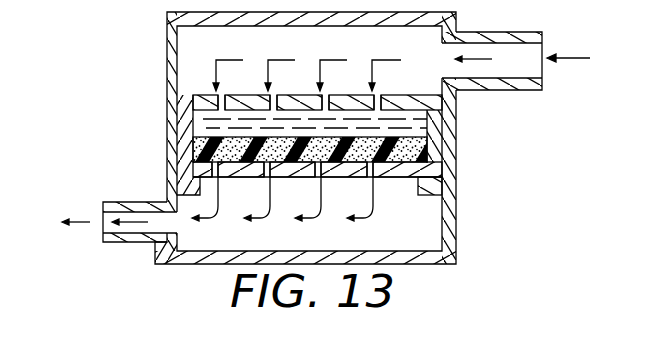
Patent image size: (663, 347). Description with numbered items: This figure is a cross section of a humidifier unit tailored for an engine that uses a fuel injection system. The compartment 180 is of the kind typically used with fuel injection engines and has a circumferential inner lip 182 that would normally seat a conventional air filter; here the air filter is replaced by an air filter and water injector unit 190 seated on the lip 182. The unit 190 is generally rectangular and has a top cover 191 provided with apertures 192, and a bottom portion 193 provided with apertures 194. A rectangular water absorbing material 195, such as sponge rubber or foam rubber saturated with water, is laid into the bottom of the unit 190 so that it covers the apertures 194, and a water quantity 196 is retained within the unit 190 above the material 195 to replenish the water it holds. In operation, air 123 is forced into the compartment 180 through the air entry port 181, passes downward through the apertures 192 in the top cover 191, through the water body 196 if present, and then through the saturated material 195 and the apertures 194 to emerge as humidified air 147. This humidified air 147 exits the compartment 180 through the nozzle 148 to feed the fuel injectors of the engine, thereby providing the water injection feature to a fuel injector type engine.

The air 123 is at (343, 60).
The humidified air 147 is at (304, 225).
The nozzle 148 is at (140, 240).
The compartment 180 is at (457, 208).
The air entry port 181 is at (495, 32).
The lip 182 is at (432, 185).
The air filter and water injector unit 190 is at (396, 177).
The top cover 191 is at (387, 100).
The apertures 192 is at (324, 104).
The bottom portion 193 is at (371, 177).
The apertures 194 is at (322, 177).
The water absorbing material 195 is at (198, 145).
The water quantity 196 is at (205, 119).